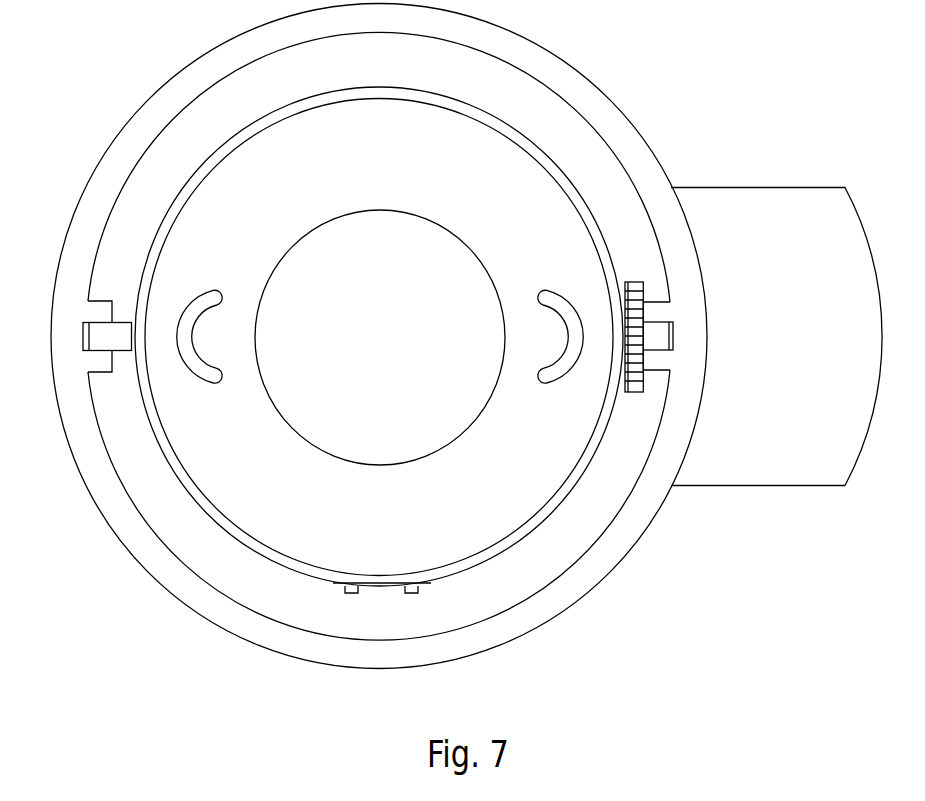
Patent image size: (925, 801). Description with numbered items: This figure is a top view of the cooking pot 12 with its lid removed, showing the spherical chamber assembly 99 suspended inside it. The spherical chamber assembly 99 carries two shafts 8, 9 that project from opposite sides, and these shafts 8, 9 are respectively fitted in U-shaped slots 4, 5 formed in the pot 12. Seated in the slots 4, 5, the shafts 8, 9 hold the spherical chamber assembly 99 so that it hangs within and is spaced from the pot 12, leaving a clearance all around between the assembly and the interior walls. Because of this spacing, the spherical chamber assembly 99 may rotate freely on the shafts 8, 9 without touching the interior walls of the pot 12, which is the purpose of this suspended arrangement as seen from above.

The U-shaped slot 4 is at (83, 329).
The U-shaped slot 5 is at (675, 334).
The shaft 8 is at (120, 343).
The shaft 9 is at (657, 333).
The pot 12 is at (240, 638).
The spherical chamber assembly 99 is at (534, 125).